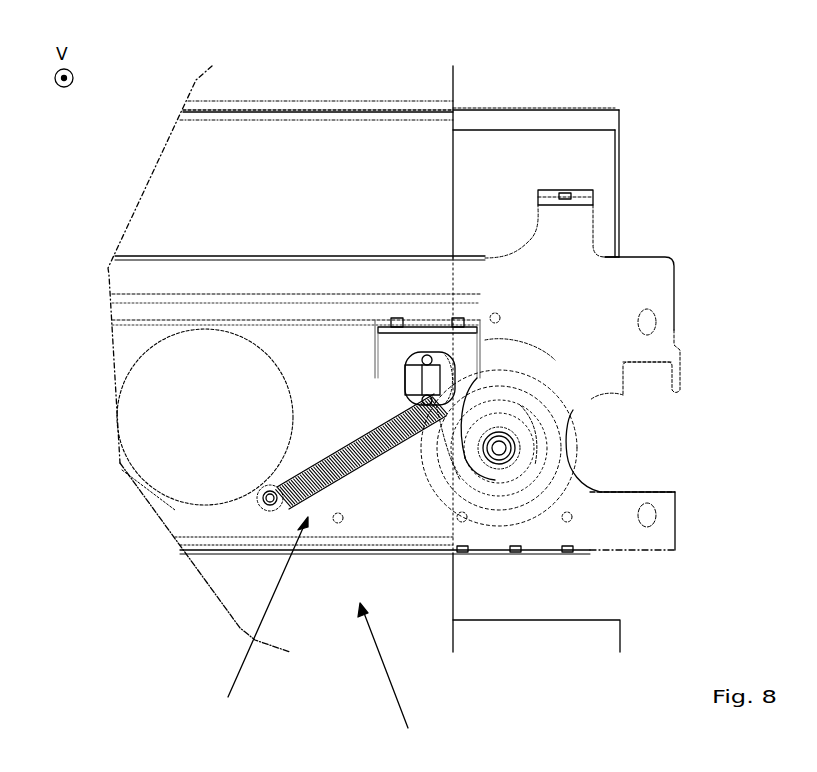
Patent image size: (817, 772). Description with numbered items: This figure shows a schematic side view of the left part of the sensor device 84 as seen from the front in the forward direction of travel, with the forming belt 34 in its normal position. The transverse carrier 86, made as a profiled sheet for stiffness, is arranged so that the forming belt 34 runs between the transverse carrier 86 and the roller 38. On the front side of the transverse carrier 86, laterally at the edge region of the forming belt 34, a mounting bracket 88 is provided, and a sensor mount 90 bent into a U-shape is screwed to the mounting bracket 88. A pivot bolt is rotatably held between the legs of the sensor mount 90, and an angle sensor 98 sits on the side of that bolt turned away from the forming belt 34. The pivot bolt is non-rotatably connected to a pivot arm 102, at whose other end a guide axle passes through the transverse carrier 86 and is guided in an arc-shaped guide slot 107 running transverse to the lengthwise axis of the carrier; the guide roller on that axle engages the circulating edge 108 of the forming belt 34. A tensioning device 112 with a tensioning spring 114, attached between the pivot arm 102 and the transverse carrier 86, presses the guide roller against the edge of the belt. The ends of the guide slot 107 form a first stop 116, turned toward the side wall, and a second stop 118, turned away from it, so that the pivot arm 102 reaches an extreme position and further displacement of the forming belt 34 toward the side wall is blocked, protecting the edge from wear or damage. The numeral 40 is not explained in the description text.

The forming belt 34 is at (342, 191).
The roller 38 is at (592, 175).
The panel edge 40 is at (598, 121).
The sensor device 84 is at (395, 675).
The transverse carrier 86 is at (600, 282).
The mounting bracket 88 is at (395, 329).
The sensor mount 90 is at (462, 357).
The angle sensor 98 is at (393, 397).
The pivot arm 102 is at (485, 400).
The arc-shaped guide slot 107 is at (470, 473).
The circulating edge 108 is at (453, 158).
The tensioning device 112 is at (247, 617).
The tensioning spring 114 is at (318, 468).
The first stop 116 is at (560, 408).
The second stop 118 is at (470, 473).